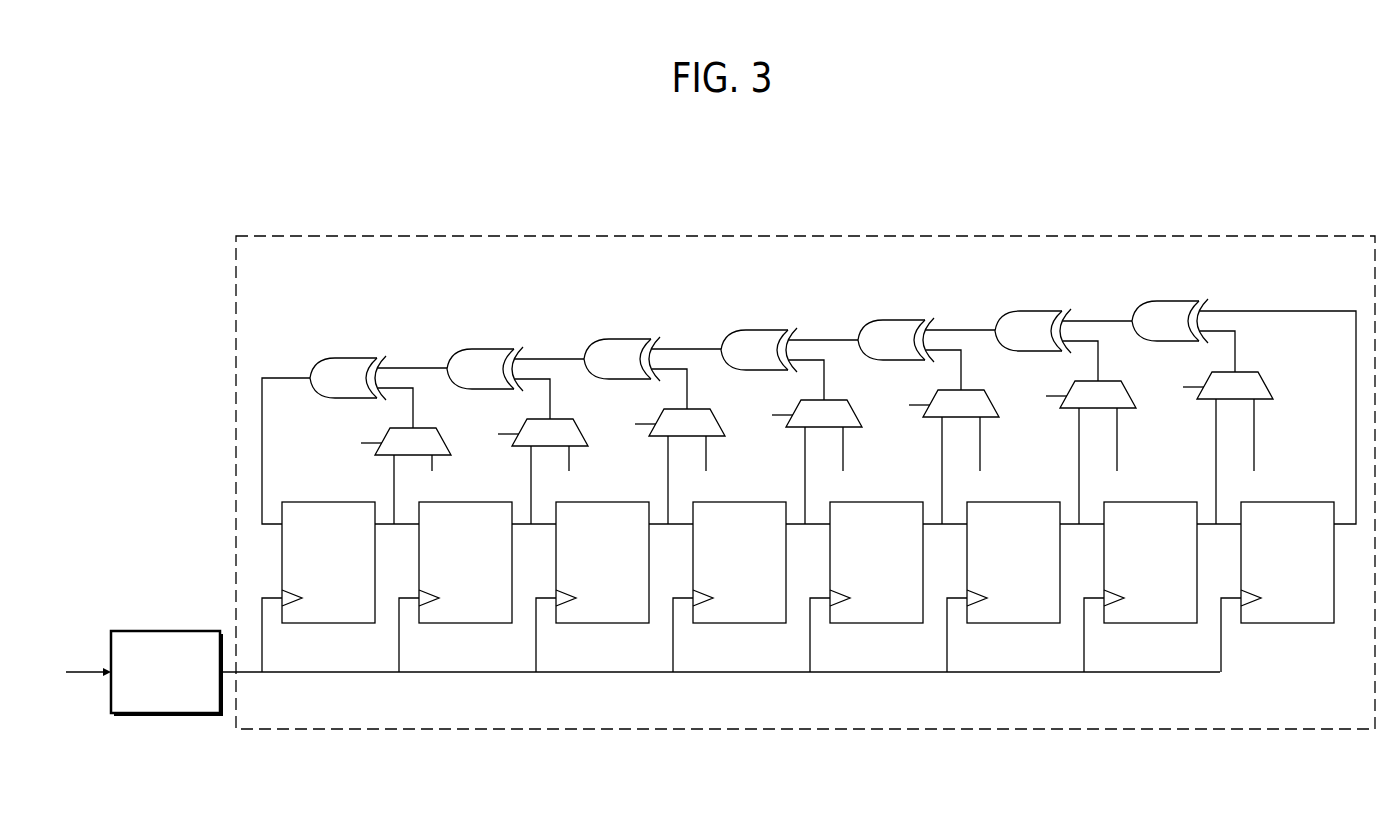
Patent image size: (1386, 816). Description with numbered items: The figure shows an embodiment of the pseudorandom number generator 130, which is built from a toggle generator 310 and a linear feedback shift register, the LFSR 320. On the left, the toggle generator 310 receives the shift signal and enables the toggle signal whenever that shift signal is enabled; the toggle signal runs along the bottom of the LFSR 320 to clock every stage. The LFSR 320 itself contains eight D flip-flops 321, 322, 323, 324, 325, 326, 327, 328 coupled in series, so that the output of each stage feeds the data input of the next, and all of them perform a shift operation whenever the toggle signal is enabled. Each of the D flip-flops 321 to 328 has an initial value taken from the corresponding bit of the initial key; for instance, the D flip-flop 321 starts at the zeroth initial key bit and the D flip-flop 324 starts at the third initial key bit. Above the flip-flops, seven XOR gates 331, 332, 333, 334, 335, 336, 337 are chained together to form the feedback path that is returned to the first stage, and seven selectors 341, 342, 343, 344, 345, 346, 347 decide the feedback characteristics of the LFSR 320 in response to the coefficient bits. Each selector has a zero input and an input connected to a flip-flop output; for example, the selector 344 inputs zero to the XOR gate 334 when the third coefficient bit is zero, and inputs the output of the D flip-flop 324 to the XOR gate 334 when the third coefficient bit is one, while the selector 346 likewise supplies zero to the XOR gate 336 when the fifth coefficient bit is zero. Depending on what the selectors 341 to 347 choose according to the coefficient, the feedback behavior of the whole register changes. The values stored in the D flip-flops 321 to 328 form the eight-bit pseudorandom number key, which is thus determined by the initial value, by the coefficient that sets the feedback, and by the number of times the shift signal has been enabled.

The pseudorandom number generator 130 is at (791, 193).
The toggle generator 310 is at (180, 631).
The LFSR (Linear Feedback Shift Register) 320 is at (1292, 236).
The D flip-flop 321 is at (328, 500).
The D flip-flop 322 is at (465, 500).
The D flip-flop 323 is at (602, 500).
The D flip-flop 324 is at (739, 500).
The D flip-flop 325 is at (876, 500).
The D flip-flop 326 is at (1013, 500).
The D flip-flop 327 is at (1150, 500).
The D flip-flop 328 is at (1287, 500).
The XOR gate 331 is at (354, 357).
The XOR gate 332 is at (491, 348).
The XOR gate 333 is at (628, 338).
The XOR gate 334 is at (765, 329).
The XOR gate 335 is at (902, 319).
The XOR gate 336 is at (1039, 310).
The XOR gate 337 is at (1176, 300).
The selector 341 is at (425, 428).
The selector 342 is at (562, 419).
The selector 343 is at (699, 409).
The selector 344 is at (836, 400).
The selector 345 is at (973, 390).
The selector 346 is at (1110, 381).
The selector 347 is at (1247, 372).